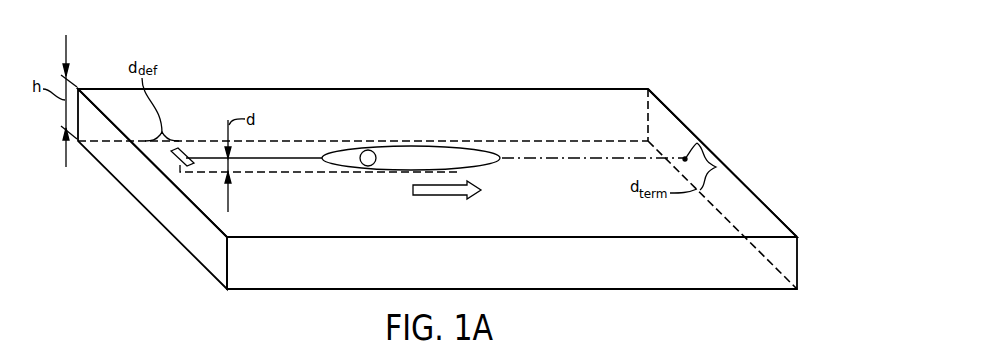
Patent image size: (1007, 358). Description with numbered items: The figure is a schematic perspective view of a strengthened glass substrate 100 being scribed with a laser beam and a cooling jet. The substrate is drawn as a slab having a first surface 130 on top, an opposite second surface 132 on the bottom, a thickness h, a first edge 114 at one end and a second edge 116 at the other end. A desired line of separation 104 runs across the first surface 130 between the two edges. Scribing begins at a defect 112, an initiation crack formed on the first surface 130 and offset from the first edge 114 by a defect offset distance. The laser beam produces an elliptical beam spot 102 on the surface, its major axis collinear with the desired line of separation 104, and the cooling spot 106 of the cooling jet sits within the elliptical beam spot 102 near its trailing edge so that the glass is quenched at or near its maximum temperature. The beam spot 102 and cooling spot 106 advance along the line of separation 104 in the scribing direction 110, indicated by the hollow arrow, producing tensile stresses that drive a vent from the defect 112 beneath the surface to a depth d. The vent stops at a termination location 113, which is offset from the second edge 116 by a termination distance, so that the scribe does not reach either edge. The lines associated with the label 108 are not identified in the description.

The strengthened glass substrate 100 is at (658, 39).
The elliptical beam spot 102 is at (471, 146).
The desired line of separation 104 is at (538, 160).
The cooling spot 106 is at (371, 150).
The channel 108 is at (288, 157).
The scribing direction 110 is at (440, 197).
The defect 112 is at (179, 149).
The termination location 113 is at (697, 143).
The first edge 114 is at (196, 246).
The second edge 116 is at (768, 210).
The first surface 130 is at (678, 230).
The second surface 132 is at (643, 290).